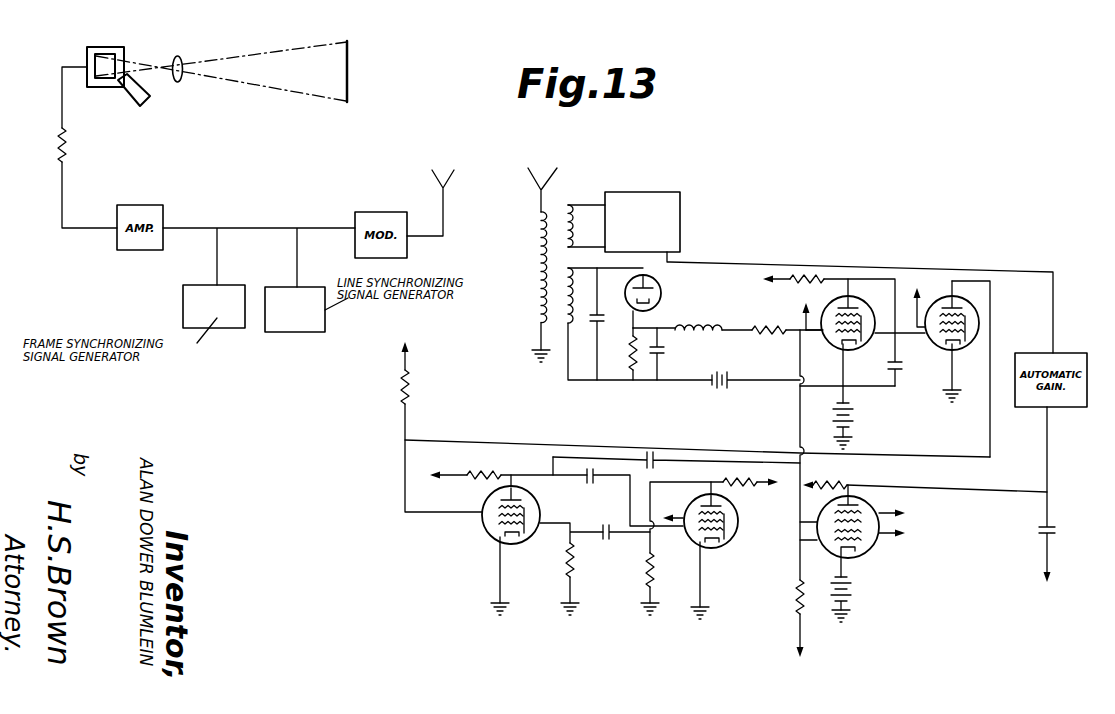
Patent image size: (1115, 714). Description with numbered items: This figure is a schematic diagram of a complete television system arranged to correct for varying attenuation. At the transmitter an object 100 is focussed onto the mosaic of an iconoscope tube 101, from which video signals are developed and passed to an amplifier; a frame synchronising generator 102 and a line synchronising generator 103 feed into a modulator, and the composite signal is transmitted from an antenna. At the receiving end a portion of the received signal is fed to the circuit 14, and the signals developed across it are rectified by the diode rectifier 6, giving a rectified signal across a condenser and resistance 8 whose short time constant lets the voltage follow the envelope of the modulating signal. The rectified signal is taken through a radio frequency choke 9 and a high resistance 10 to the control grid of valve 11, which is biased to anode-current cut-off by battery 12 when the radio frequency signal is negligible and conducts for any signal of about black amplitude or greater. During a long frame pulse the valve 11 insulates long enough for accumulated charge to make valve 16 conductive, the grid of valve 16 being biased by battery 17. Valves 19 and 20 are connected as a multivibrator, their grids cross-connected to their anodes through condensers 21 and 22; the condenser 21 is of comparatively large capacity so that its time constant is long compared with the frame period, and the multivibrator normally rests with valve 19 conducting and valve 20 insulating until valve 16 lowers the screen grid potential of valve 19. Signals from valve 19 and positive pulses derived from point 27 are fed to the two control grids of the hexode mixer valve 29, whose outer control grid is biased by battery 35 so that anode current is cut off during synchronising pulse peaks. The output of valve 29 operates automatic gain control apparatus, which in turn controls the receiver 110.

The object 100 is at (350, 68).
The iconoscope tube 101 is at (118, 47).
The frame synchronising generator 102 is at (183, 287).
The line synchronising generator 103 is at (303, 288).
The receiver 110 is at (653, 197).
The circuit 14 is at (568, 267).
The diode rectifier 6 is at (657, 283).
The resistance 8 is at (627, 357).
The radio frequency choke 9 is at (702, 326).
The high resistance 10 is at (766, 326).
The battery 17 is at (664, 350).
The battery 12 is at (731, 377).
The valve 11 is at (857, 306).
The valve 16 is at (963, 309).
The point 27 is at (515, 474).
The condenser 21 is at (589, 485).
The valve 19 is at (488, 534).
The condenser 22 is at (611, 542).
The valve 20 is at (712, 548).
The hexode mixer valve 29 is at (877, 549).
The battery 35 is at (852, 588).